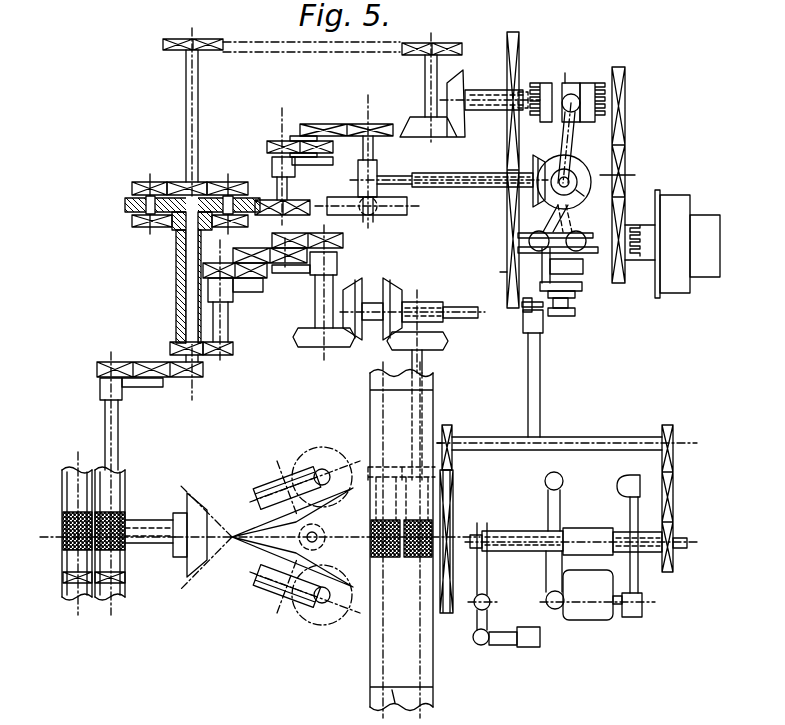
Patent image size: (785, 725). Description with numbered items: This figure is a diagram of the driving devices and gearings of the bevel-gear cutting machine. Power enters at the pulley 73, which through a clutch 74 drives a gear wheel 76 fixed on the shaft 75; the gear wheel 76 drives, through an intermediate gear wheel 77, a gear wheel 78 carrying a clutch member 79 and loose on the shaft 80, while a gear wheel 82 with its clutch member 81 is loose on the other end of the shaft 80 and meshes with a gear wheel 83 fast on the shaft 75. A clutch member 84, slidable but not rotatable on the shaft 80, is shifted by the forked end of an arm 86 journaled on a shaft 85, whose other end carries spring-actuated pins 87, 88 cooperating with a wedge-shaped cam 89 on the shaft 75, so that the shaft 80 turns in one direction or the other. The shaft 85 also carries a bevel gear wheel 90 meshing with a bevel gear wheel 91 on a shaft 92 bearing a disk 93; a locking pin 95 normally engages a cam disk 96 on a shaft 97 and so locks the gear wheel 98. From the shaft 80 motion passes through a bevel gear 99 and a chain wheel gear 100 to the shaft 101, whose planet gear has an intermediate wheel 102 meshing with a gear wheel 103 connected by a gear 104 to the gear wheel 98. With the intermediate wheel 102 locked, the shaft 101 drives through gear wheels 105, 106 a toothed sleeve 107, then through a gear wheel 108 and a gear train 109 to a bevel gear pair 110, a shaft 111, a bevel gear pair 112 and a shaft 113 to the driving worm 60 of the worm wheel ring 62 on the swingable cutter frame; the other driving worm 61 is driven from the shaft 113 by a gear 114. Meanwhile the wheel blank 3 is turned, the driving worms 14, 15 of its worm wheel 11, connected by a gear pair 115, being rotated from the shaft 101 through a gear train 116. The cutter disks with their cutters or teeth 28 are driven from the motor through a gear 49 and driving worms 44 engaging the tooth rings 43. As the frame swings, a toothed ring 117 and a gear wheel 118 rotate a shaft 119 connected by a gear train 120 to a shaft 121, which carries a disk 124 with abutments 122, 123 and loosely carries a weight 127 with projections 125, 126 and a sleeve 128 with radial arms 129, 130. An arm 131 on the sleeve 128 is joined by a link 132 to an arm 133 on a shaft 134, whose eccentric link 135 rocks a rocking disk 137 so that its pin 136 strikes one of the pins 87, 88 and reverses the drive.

The wheel blank 3 is at (197, 506).
The worm wheel 11 is at (94, 600).
The driving worm 14 is at (64, 515).
The driving worm 15 is at (124, 516).
The cutters or teeth 28 is at (240, 543).
The tooth ring of a worm wheel 43 is at (268, 582).
The driving worm 44 is at (320, 610).
The gear 49 is at (320, 535).
The driving worm 60 is at (410, 558).
The driving worm 61 is at (369, 545).
The worm wheel ring 62 is at (394, 707).
The pulley 73 is at (672, 200).
The clutch 74 is at (644, 254).
The shaft 75 is at (585, 253).
The gear wheel 76 is at (618, 277).
The intermediate gear wheel 77 is at (627, 163).
The gear wheel 78 is at (625, 92).
The clutch member 79 is at (600, 83).
The shaft 80 is at (540, 83).
The clutch member 81 is at (525, 88).
The gear wheel 82 is at (513, 38).
The gear wheel 83 is at (492, 267).
The clutch member 84 is at (572, 83).
The shaft 85 is at (592, 199).
The arm 86 is at (572, 150).
The spring actuated pin 87 is at (536, 231).
The spring actuated pin 88 is at (580, 233).
The wedge shaped cam 89 is at (580, 272).
The bevel gear wheel 90 is at (580, 172).
The bevel gear wheel 91 is at (539, 158).
The shaft 92 is at (462, 172).
The disk 93 is at (378, 172).
The locking pin 95 is at (368, 220).
The cam disk 96 is at (407, 212).
The shaft 97 is at (333, 161).
The gear wheel 98 is at (368, 125).
The bevel gear 99 is at (462, 80).
The chain wheel gear 100 is at (330, 50).
The shaft 101 is at (186, 95).
The intermediate wheel 102 is at (125, 208).
The gear wheel 103 is at (290, 200).
The gear 104 is at (282, 141).
The gear wheel 105 is at (196, 183).
The gear wheel 106 is at (230, 183).
The toothed sleeve 107 is at (176, 268).
The gear wheel 108 is at (233, 348).
The gear train 109 is at (262, 274).
The bevel gear pair 110 is at (310, 345).
The shaft 111 is at (369, 303).
The bevel gear pair 112 is at (403, 296).
The shaft 113 is at (425, 356).
The gear 114 is at (392, 468).
The gear pair 115 is at (108, 600).
The gear train 116 is at (128, 366).
The toothed ring 117 is at (450, 498).
The gear wheel 118 is at (452, 432).
The shaft 119 is at (568, 437).
The gear train 120 is at (673, 484).
The shaft 121 is at (684, 538).
The abutment 122 is at (640, 617).
The abutment 123 is at (620, 478).
The disk 124 is at (630, 515).
The projection 125 is at (612, 620).
The projection 126 is at (556, 610).
The weight 127 is at (586, 620).
The sleeve 128 is at (500, 531).
The radial arm 129 is at (560, 505).
The radial arm 130 is at (552, 610).
The arm 131 is at (487, 585).
The link 132 is at (473, 637).
The arm 133 is at (510, 645).
The shaft 134 is at (540, 384).
The link 135 is at (527, 300).
The pin 136 is at (540, 258).
The rocking disk 137 is at (577, 295).